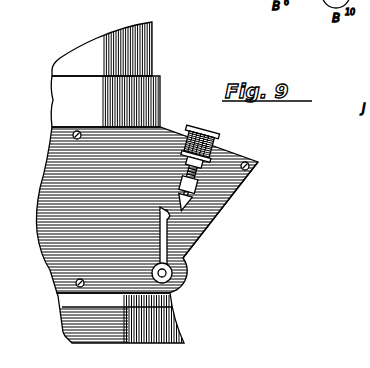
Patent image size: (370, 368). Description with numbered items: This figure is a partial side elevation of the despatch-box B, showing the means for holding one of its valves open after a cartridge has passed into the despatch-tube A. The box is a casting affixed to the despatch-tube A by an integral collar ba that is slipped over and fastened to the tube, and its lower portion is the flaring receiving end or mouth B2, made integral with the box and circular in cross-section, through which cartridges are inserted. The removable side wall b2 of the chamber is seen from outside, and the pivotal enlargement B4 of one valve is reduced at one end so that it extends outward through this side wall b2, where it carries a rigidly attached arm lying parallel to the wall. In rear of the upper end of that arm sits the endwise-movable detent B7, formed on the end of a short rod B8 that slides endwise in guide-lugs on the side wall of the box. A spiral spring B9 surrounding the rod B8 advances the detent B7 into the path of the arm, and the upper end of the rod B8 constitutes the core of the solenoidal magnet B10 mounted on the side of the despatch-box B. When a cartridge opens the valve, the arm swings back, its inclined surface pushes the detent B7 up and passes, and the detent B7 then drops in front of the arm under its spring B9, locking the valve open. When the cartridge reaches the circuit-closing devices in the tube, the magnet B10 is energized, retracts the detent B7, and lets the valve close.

The despatch-tube A is at (203, 33).
The integral collar ba is at (160, 97).
The side walls b2 is at (147, 210).
The despatch-box B is at (222, 220).
The pivotal enlargement B4 is at (160, 228).
The solenoidal magnet B10 is at (220, 140).
The short rod B8 is at (202, 172).
The detent B7 is at (197, 197).
The spiral spring B9 is at (180, 201).
The receiving end or mouth B2 is at (170, 310).